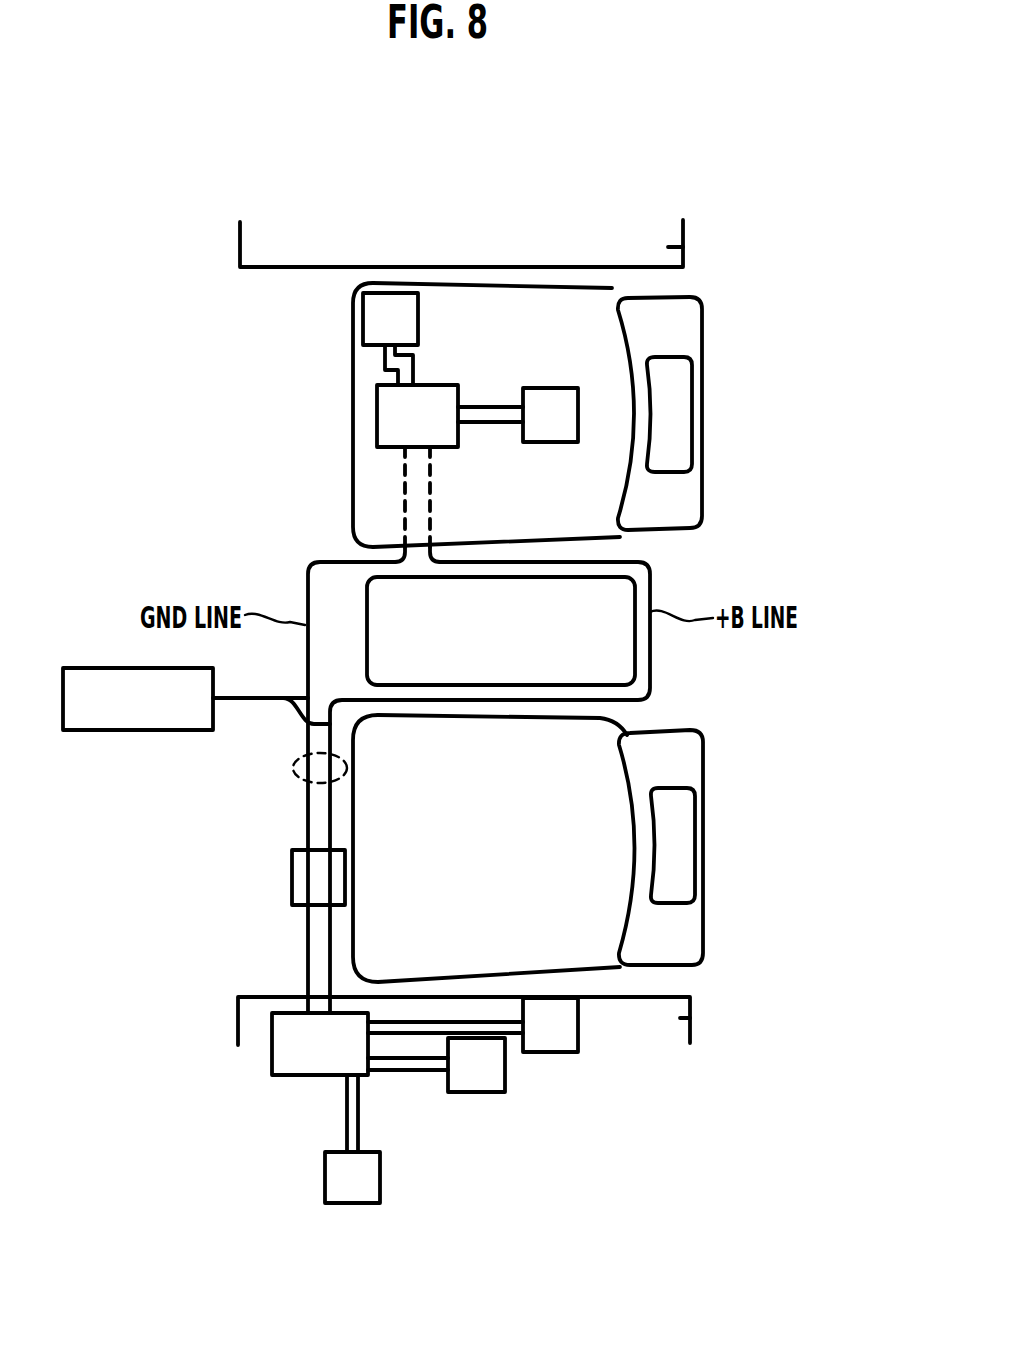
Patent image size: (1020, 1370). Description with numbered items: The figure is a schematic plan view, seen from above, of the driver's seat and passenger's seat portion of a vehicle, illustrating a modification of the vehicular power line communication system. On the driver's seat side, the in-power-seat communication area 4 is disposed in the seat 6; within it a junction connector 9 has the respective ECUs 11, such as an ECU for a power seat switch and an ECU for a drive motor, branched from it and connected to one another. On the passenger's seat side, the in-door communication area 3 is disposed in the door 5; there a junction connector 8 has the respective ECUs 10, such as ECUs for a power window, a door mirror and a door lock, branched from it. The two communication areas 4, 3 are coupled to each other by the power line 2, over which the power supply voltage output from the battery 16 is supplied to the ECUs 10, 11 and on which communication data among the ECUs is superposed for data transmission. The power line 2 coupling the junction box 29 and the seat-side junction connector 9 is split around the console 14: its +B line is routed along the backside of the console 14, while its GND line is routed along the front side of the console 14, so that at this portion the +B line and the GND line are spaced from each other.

The power line 2 is at (292, 766).
The in-door communication area 3 is at (606, 1120).
The in-power-seat communication area 4 is at (341, 358).
The door 5 is at (683, 247).
The seat 6 is at (592, 313).
The junction connector 8 is at (285, 1062).
The junction connector 9 is at (447, 398).
The ECU 10 is at (545, 1047).
The ECU 11 is at (362, 315).
The console 14 is at (593, 647).
The battery 16 is at (95, 730).
The junction box 29 is at (292, 863).